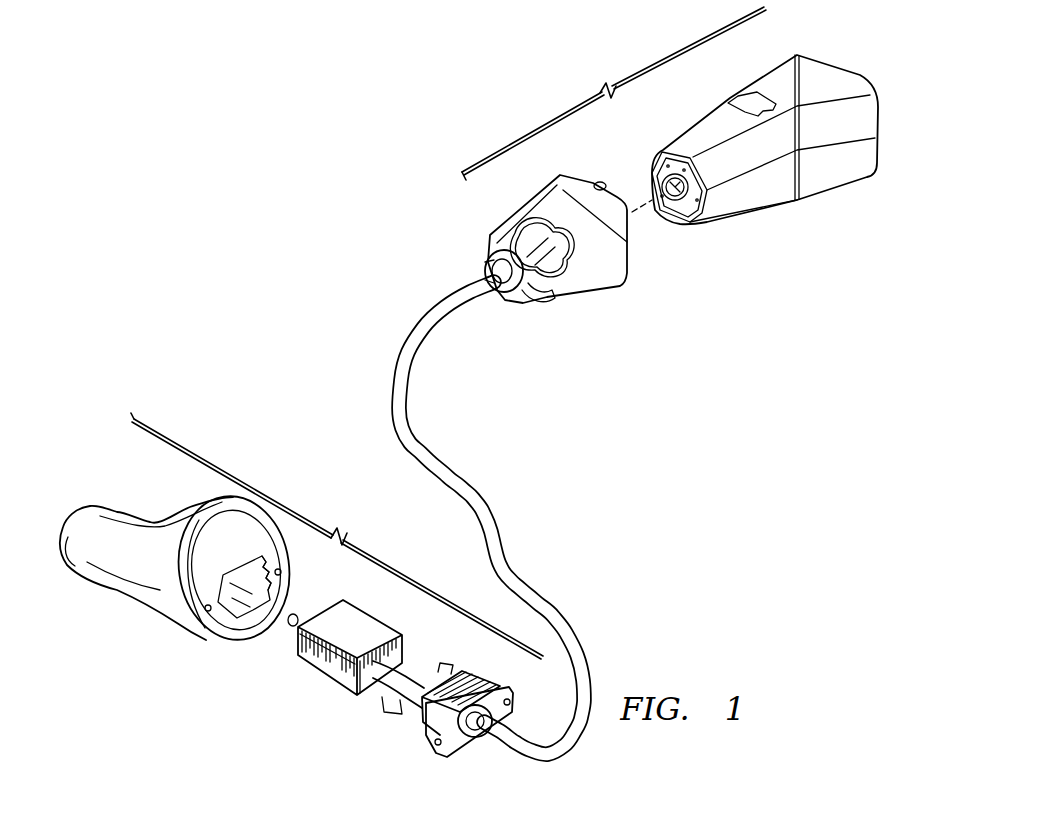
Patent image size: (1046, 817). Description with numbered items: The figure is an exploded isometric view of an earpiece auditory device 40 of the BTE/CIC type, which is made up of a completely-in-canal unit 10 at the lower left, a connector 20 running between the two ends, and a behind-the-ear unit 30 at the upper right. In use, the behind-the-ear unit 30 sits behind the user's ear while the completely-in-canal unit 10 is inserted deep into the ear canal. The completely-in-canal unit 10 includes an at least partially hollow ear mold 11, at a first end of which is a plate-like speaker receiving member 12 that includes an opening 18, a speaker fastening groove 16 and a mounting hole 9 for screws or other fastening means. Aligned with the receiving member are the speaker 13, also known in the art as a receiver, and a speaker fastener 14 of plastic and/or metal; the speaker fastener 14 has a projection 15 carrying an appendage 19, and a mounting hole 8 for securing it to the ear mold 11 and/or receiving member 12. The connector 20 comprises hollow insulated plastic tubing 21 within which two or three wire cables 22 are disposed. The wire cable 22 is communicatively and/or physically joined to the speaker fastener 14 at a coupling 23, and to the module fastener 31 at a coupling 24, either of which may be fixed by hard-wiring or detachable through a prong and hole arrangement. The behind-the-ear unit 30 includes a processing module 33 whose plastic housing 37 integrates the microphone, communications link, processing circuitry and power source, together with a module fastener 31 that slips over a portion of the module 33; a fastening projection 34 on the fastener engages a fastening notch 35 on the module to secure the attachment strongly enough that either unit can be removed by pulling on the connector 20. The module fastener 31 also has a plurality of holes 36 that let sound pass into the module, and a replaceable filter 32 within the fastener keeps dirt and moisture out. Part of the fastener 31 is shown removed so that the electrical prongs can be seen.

The mounting hole 8 is at (445, 752).
The mounting hole 9 is at (210, 627).
The completely-in-canal unit 10 is at (337, 536).
The ear mold 11 is at (138, 596).
The speaker receiving member 12 is at (288, 557).
The speaker 13 is at (322, 668).
The speaker fastener 14 is at (508, 713).
The projection 15 is at (401, 720).
The speaker fastening groove 16 is at (276, 579).
The opening 18 is at (230, 604).
The appendage 19 is at (442, 662).
The connector 20 is at (393, 324).
The hollow tubing 21 is at (481, 491).
The wire cable 22 is at (397, 418).
The coupling 23 is at (483, 742).
The coupling 24 is at (486, 271).
The behind-the-ear unit 30 is at (614, 93).
The module fastener 31 is at (542, 207).
The filter 32 is at (492, 243).
The processing module 33 is at (765, 117).
The fastening projection 34 is at (598, 182).
The fastening notch 35 is at (763, 98).
The holes 36 is at (553, 301).
The housing 37 is at (711, 130).
The earpiece auditory device 40 is at (268, 237).